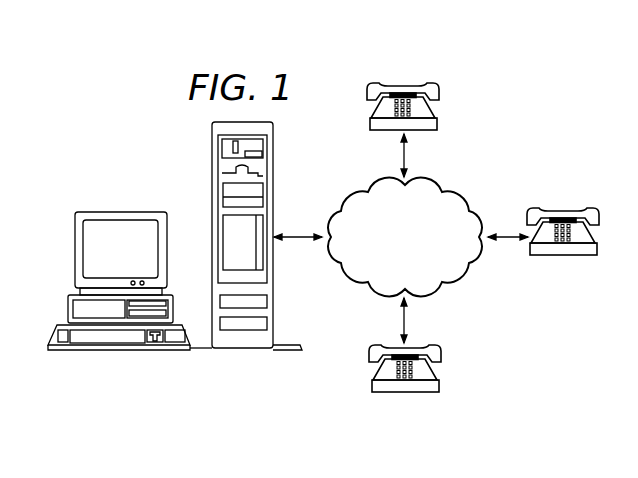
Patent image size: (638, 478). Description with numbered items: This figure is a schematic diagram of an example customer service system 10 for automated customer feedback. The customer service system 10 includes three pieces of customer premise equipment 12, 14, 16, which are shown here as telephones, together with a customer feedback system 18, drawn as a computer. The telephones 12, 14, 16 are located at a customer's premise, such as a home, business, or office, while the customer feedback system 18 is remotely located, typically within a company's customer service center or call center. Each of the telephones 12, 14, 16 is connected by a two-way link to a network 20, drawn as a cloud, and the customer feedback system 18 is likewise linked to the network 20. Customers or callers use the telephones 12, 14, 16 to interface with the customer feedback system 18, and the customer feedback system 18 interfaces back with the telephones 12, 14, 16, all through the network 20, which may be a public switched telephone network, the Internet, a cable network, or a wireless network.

The customer service system 10 is at (545, 340).
The customer premise equipment 12 is at (404, 80).
The customer premise equipment 14 is at (563, 206).
The customer premise equipment 16 is at (405, 393).
The customer feedback system 18 is at (304, 359).
The network 20 is at (419, 252).